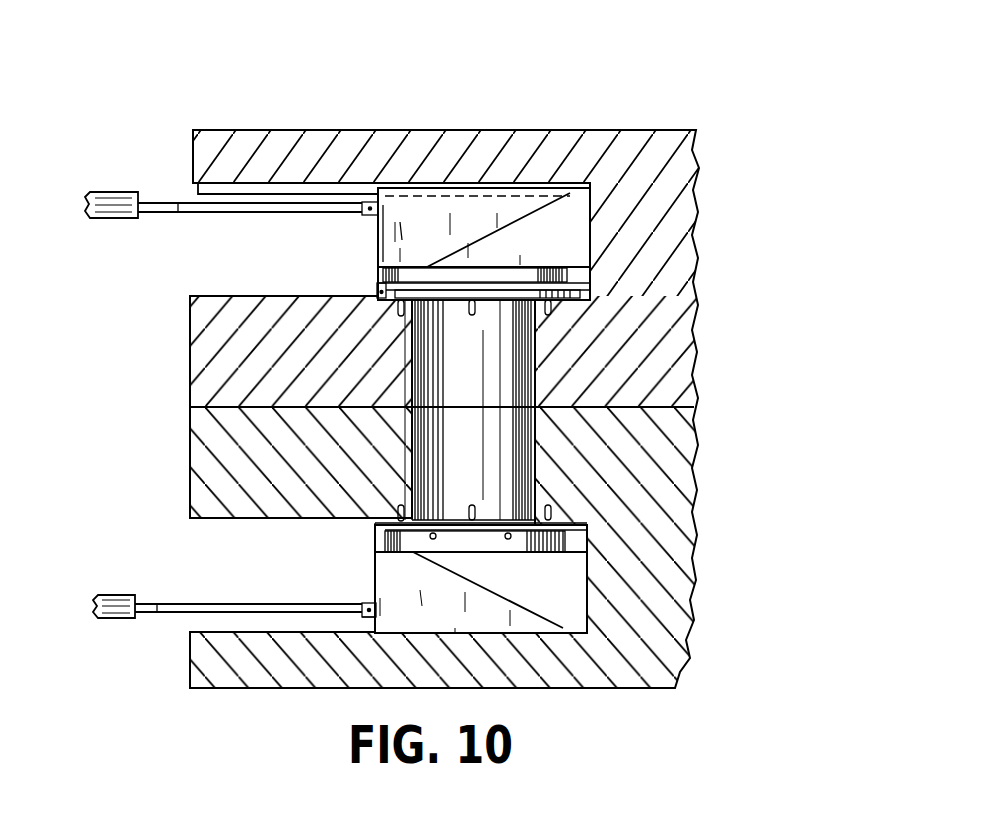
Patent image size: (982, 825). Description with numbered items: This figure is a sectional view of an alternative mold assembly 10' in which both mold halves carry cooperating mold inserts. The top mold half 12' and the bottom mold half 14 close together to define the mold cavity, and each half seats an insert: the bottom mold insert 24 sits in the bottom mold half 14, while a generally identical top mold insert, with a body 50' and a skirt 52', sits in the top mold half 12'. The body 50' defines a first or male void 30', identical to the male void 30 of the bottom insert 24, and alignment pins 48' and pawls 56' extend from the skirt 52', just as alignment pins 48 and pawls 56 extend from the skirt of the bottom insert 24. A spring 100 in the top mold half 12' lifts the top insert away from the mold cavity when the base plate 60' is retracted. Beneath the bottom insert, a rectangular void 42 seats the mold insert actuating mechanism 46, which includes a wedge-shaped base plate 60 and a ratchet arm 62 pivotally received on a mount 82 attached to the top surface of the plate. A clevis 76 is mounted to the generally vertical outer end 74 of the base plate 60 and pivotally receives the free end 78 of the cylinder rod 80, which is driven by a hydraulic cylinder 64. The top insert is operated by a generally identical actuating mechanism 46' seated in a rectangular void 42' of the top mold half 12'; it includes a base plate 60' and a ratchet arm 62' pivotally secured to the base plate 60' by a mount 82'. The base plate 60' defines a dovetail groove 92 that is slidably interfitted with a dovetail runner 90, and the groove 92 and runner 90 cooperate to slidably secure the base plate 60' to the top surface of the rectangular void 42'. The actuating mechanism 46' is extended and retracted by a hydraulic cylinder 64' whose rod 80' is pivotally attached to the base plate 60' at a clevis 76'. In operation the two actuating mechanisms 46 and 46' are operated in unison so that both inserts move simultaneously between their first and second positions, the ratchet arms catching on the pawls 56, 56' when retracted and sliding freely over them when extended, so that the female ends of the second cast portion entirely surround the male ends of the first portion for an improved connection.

The apparatus 10' is at (824, 88).
The top mold half 12' is at (444, 363).
The bottom mold half 14 is at (605, 688).
The mold insert 24 is at (537, 438).
The first or male void 30 is at (473, 410).
The first or male void 30' is at (473, 410).
The rectangular void 42 is at (567, 579).
The rectangular void 42' is at (580, 244).
The mold insert actuating mechanism 46 is at (248, 588).
The actuating mechanism 46' is at (250, 239).
The alignment pins 48 is at (485, 498).
The alignment pins 48' is at (489, 330).
The body 50' is at (377, 410).
The skirt 52' is at (484, 230).
The pawls 56 is at (476, 567).
The pawls 56' is at (507, 330).
The wedge-shaped base plate 60 is at (481, 613).
The base plate 60' is at (503, 135).
The ratchet arm 62 is at (613, 579).
The ratchet arm 62' is at (616, 244).
The hydraulic cylinder 64 is at (103, 634).
The hydraulic cylinder 64' is at (96, 141).
The outer end 74 is at (376, 568).
The clevis 76 is at (335, 594).
The clevis 76' is at (338, 226).
The free end 78 is at (368, 616).
The cylinder rod 80 is at (136, 566).
The rod 80' is at (144, 240).
The mount 82 is at (428, 534).
The mount 82' is at (339, 278).
The dove tail runner 90 is at (256, 188).
The dove tail groove 92 is at (408, 233).
The spring 100 is at (566, 292).